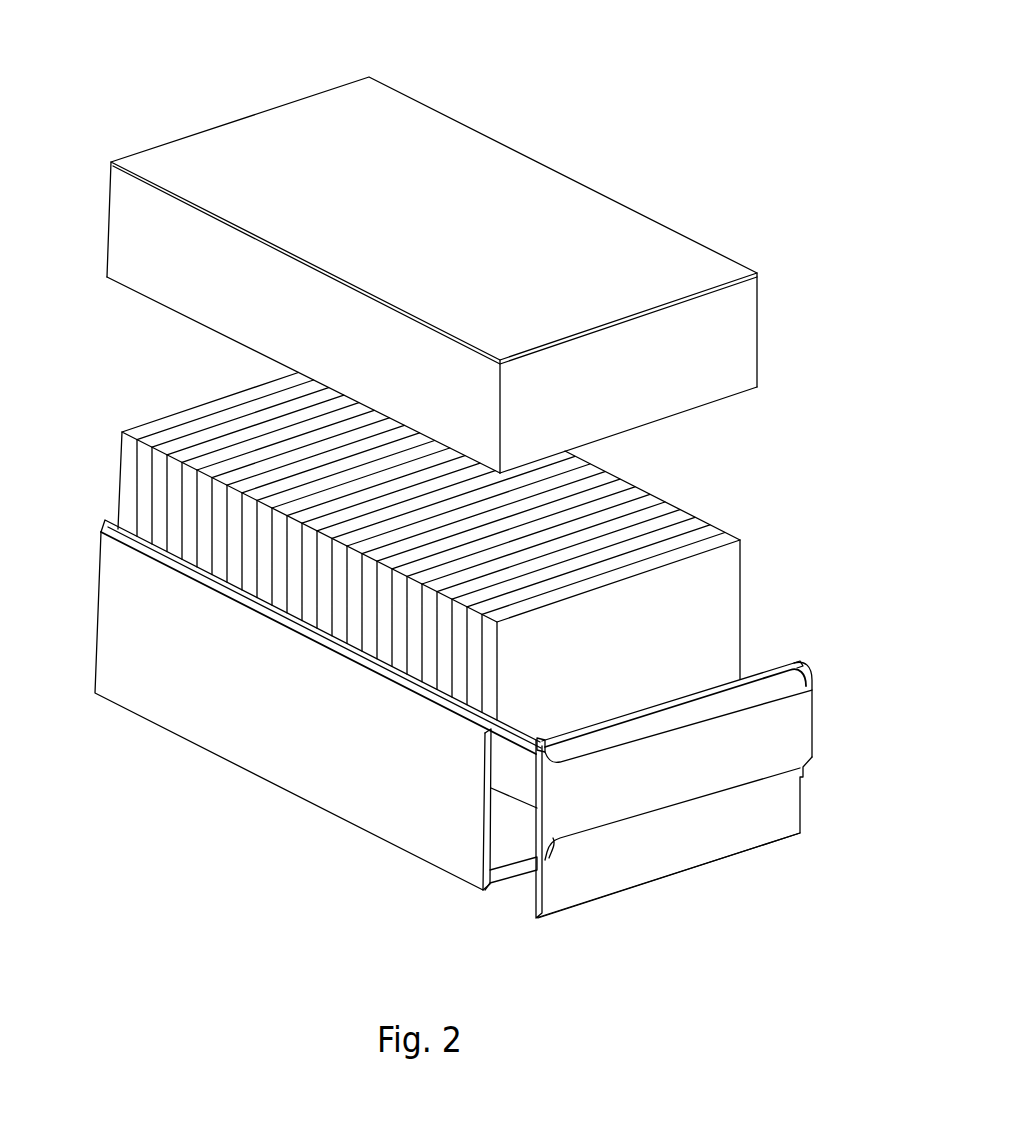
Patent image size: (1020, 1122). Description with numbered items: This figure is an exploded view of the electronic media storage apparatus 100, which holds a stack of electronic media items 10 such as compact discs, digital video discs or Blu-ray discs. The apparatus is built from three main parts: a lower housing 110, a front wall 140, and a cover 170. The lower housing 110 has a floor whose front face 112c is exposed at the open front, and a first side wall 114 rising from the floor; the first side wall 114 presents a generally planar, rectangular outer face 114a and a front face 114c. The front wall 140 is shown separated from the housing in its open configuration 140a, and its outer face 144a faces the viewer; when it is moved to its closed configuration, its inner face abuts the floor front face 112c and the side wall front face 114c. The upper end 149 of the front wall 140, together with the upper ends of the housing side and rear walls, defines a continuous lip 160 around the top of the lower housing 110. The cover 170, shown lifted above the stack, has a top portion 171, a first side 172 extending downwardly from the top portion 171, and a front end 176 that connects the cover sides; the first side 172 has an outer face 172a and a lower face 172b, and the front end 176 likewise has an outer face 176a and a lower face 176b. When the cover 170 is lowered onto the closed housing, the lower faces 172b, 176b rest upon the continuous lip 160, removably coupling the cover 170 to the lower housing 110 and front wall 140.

The electronic media storage apparatus 100 is at (586, 72).
The electronic media item 10 is at (188, 428).
The lower housing 110 is at (126, 764).
The front face of floor 112c is at (500, 888).
The first side wall 114 is at (237, 735).
The outer face of first side wall 114a is at (330, 723).
The front face of first side wall 114c is at (483, 850).
The front wall 140 is at (729, 901).
The open configuration 140a is at (609, 937).
The outer face of front wall 144a is at (695, 863).
The upper end of front wall 149 is at (814, 659).
The continuous lip 160 is at (96, 516).
The cover 170 is at (621, 179).
The top portion 171 is at (407, 117).
The first side of cover 172 is at (113, 217).
The outer face of cover first side 172a is at (305, 317).
The lower face of cover first side 172b is at (143, 297).
The front end of cover 176 is at (740, 337).
The outer face of cover front end 176a is at (651, 389).
The lower face of cover front end 176b is at (705, 405).